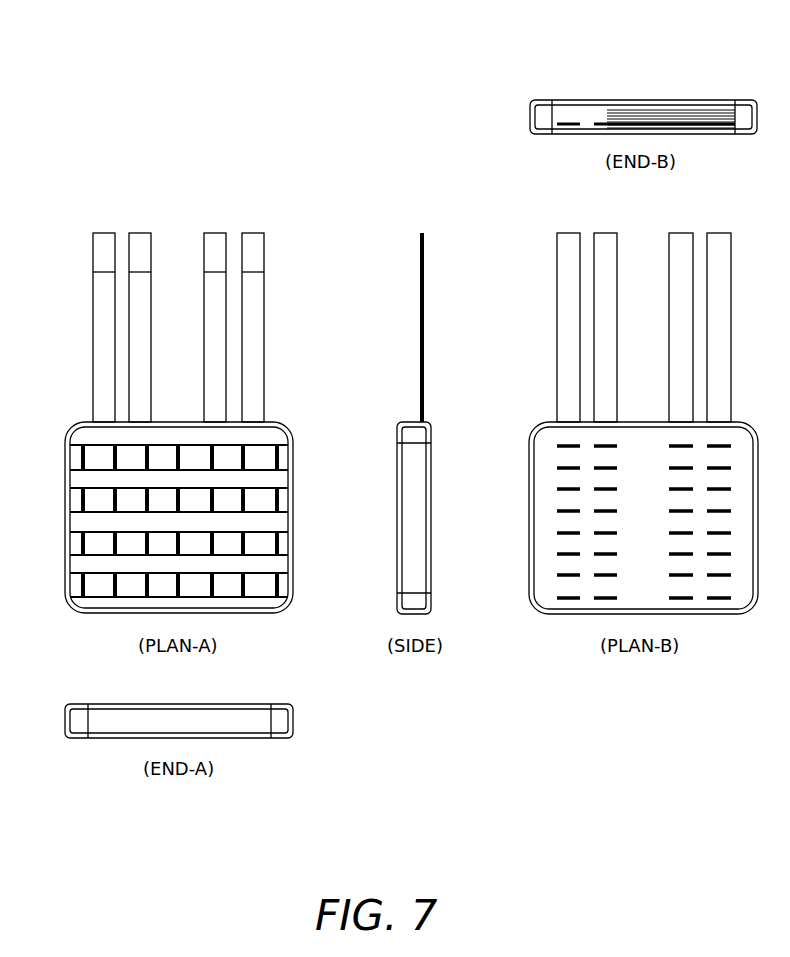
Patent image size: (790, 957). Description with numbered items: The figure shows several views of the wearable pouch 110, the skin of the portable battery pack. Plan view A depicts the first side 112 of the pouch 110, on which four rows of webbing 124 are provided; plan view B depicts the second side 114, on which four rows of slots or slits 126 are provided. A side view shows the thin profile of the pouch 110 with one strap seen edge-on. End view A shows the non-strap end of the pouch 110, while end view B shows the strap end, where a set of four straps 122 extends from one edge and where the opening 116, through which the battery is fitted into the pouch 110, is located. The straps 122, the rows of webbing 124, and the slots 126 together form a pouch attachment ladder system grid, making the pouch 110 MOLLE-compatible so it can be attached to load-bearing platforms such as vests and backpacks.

The pouch 110 is at (238, 81).
The first side 112 is at (80, 437).
The second side 114 is at (431, 484).
The opening 116 is at (672, 112).
The straps 122 is at (93, 293).
The rows of webbing 124 is at (97, 541).
The rows of slots or slits 126 is at (570, 553).